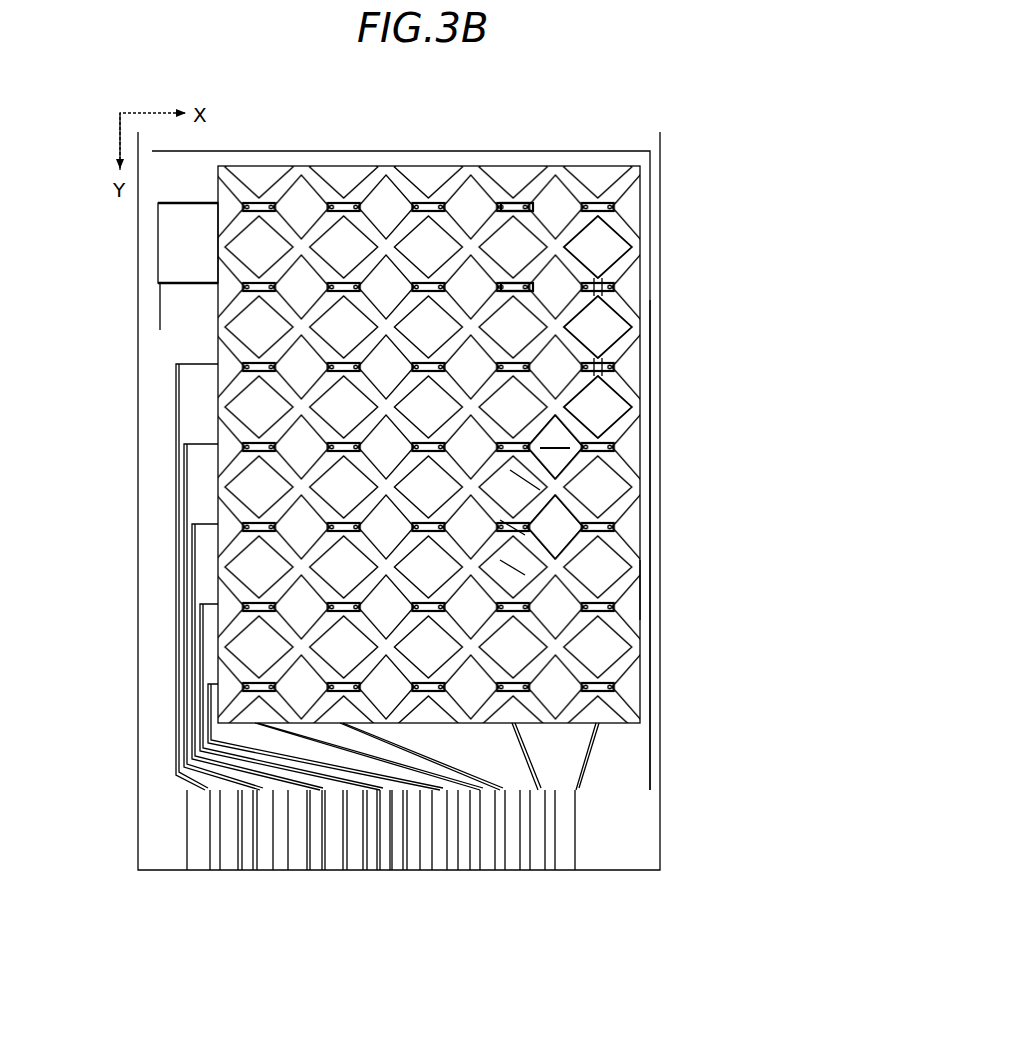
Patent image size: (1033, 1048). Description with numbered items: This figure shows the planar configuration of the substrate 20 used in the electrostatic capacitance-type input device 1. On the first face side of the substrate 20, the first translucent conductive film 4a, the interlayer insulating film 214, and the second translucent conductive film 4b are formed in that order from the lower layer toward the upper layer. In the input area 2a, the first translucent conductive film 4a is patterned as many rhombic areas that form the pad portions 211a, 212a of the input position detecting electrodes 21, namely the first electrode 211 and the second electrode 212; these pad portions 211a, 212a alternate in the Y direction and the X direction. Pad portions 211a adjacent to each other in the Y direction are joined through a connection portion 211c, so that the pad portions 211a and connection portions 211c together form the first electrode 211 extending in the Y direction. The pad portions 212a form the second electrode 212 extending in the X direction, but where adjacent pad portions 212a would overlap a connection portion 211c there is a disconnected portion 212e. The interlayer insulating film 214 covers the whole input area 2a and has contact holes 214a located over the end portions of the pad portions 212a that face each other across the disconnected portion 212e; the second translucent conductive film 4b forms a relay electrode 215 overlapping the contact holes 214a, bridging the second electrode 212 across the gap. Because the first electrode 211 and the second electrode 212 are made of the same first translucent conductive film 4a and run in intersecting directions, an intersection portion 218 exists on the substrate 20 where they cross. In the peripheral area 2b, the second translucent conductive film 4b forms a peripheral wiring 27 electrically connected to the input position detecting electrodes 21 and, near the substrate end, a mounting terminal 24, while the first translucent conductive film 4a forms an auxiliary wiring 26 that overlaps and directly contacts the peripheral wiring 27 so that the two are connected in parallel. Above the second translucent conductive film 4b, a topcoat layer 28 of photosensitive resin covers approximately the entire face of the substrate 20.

The electrostatic capacitance-type input device 1 is at (680, 160).
The substrate 20 is at (655, 880).
The input position detecting electrodes 21 is at (429, 444).
The mounting terminal 24 is at (185, 880).
The auxiliary wiring 26 is at (195, 640).
The peripheral wiring 27 is at (416, 592).
The topcoat layer 28 is at (650, 736).
The input area 2a is at (213, 252).
The peripheral area 2b is at (190, 325).
The first translucent conductive film 4a is at (429, 444).
The second translucent conductive film 4b is at (643, 531).
The first electrode 211 is at (711, 327).
The pad portion 211a is at (614, 244).
The connection portion 211c is at (608, 283).
The second electrode 212 is at (693, 487).
The pad portion 212a is at (560, 418).
The disconnected portion 212e is at (520, 455).
The interlayer insulating film 214 is at (641, 592).
The contact holes 214a is at (505, 518).
The relay electrode 215 is at (515, 475).
The intersection portion 218 is at (520, 278).